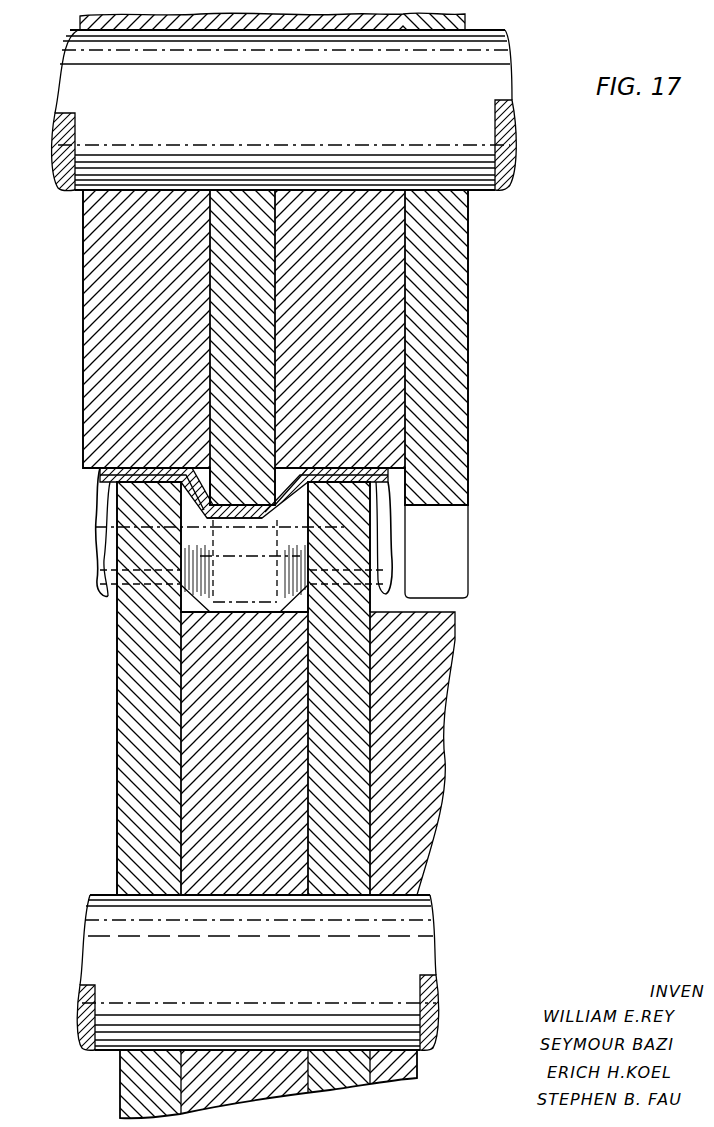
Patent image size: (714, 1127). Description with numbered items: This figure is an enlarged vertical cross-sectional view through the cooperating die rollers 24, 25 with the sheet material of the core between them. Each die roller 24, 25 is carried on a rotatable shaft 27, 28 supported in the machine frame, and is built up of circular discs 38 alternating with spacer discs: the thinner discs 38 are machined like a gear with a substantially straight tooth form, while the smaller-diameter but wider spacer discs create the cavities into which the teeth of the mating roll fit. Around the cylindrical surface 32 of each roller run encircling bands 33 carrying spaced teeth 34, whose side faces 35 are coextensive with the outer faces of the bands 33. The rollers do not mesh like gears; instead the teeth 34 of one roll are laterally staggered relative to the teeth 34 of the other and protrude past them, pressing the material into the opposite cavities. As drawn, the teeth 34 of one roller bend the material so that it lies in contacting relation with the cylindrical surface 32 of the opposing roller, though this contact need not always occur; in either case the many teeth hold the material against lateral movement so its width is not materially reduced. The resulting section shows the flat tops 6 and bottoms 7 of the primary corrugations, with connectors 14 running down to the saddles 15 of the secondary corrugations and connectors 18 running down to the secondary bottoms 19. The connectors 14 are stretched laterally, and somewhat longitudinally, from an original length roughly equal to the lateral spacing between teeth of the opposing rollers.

The top of primary corrugation 6 is at (148, 470).
The bottom of primary corrugation 7 is at (138, 578).
The connector 14 is at (226, 474).
The saddle or crest of secondary corrugation 15 is at (230, 508).
The connector 18 is at (242, 607).
The bottom of secondary corrugation 19 is at (233, 612).
The die roller 24 is at (289, 454).
The die roller 25 is at (297, 801).
The shaft 27 is at (512, 140).
The shaft 28 is at (418, 953).
The cylindrical surface 32 is at (82, 478).
The encircling band 33 is at (465, 487).
The tooth 34 is at (122, 556).
The side face of tooth 35 is at (470, 565).
The disc 38 is at (248, 290).